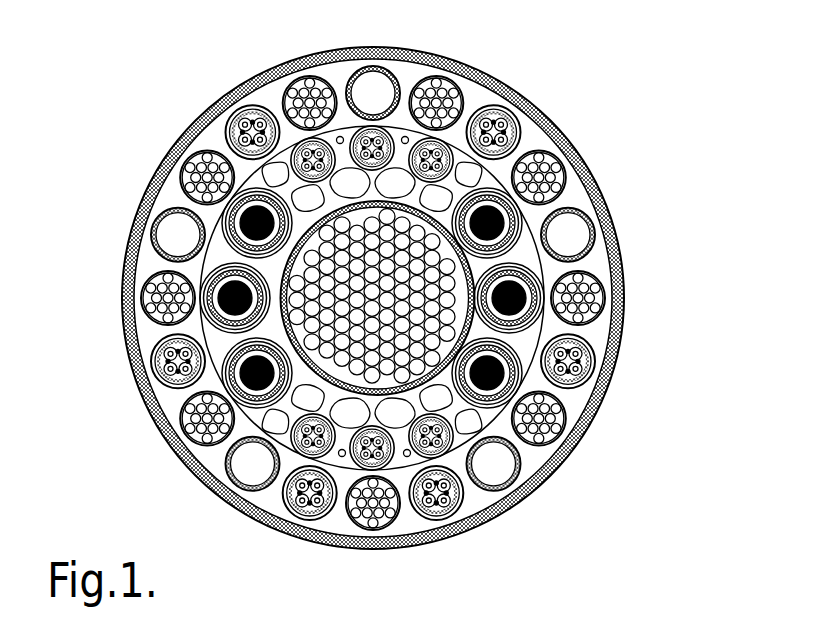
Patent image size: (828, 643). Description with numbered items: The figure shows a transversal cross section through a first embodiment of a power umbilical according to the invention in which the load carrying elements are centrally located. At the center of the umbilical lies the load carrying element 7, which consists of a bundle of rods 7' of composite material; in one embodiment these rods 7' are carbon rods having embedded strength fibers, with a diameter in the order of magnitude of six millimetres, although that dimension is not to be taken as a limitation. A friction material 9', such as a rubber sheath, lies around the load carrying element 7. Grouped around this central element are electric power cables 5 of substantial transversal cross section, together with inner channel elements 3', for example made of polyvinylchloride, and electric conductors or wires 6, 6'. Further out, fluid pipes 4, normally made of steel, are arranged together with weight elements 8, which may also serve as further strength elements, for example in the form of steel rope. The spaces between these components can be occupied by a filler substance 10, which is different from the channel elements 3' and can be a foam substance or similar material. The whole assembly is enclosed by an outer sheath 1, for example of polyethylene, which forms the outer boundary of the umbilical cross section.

The outer sheath 1 is at (175, 140).
The filler substance 10 is at (150, 265).
The friction material 9' is at (177, 200).
The electric power cable 5 is at (222, 304).
The inner channel element 3' is at (199, 447).
The load carrying element 7 is at (456, 212).
The rod 7' is at (464, 354).
The weight element 8 is at (565, 172).
The fluid pipe 4 is at (588, 245).
The electric conductor 6 is at (613, 377).
The electric conductor 6' is at (484, 491).